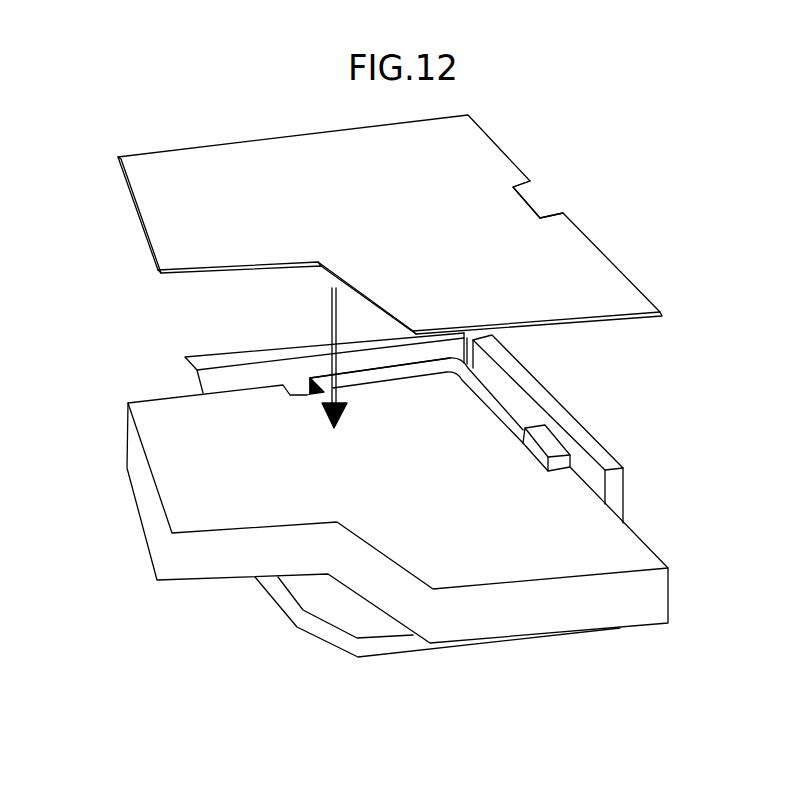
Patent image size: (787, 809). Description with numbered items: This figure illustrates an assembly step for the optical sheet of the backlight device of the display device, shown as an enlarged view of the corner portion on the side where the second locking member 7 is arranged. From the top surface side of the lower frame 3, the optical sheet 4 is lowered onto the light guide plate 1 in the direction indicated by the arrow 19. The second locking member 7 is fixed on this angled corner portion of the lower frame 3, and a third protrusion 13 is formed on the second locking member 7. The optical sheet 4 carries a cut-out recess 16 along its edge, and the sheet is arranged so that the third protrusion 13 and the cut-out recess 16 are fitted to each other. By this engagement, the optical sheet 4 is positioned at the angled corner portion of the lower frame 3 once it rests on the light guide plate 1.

The light guide plate 1 is at (462, 520).
The lower frame 3 is at (605, 458).
The optical sheet 4 is at (517, 257).
The second locking member 7 is at (478, 385).
The third protrusion 13 is at (547, 430).
The cut-out recess 16 is at (537, 199).
The arrow 19 is at (330, 321).